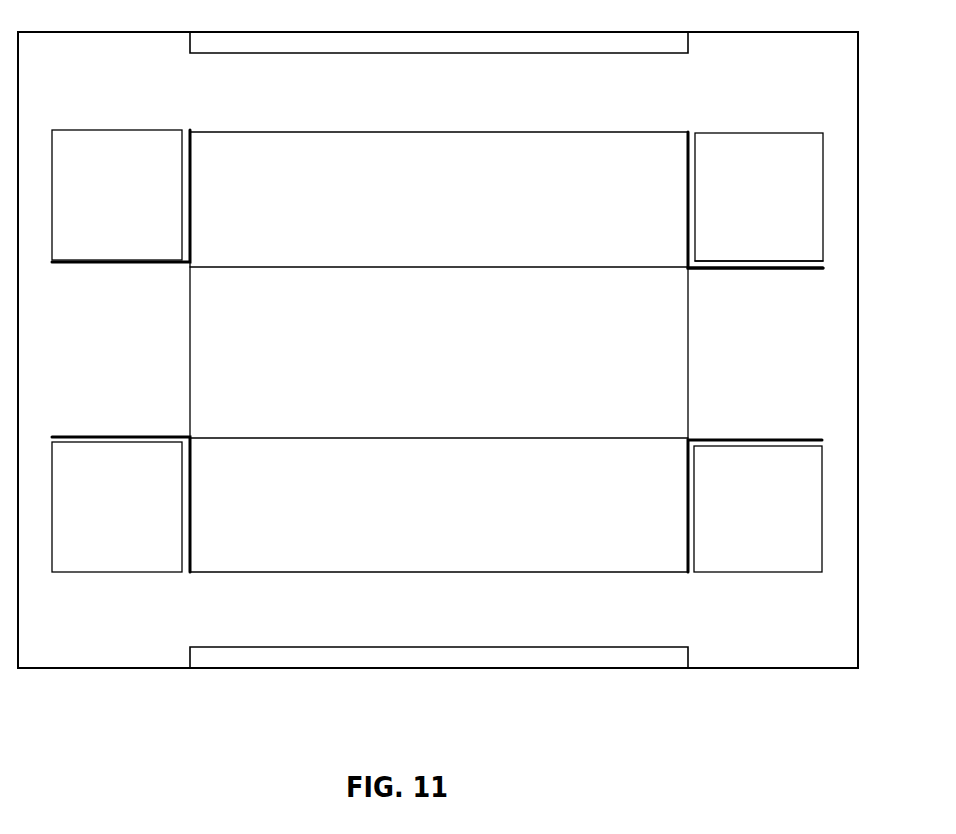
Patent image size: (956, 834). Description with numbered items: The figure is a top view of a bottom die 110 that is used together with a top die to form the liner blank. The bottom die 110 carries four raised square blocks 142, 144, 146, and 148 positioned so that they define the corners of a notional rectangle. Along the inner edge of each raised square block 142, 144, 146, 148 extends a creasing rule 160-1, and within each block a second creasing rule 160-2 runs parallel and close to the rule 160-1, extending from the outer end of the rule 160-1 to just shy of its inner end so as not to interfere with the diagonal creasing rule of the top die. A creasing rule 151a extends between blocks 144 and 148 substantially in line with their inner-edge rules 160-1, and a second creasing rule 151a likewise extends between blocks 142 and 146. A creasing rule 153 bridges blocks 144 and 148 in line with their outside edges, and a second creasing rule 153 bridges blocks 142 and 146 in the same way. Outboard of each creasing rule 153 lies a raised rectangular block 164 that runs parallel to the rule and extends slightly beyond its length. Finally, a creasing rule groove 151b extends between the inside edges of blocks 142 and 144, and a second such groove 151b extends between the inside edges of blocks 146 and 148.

The bottom die 110 is at (125, 668).
The raised rectangular block 164 is at (362, 43).
The raised square block 148 is at (110, 140).
The raised square block 144 is at (798, 162).
The raised square block 146 is at (95, 448).
The raised square block 142 is at (752, 555).
The creasing rule 153 is at (410, 133).
The creasing rule 151a is at (432, 268).
The creasing rule groove 151b is at (190, 360).
The creasing rule 160-1 is at (758, 270).
The creasing rule 160-2 is at (745, 260).